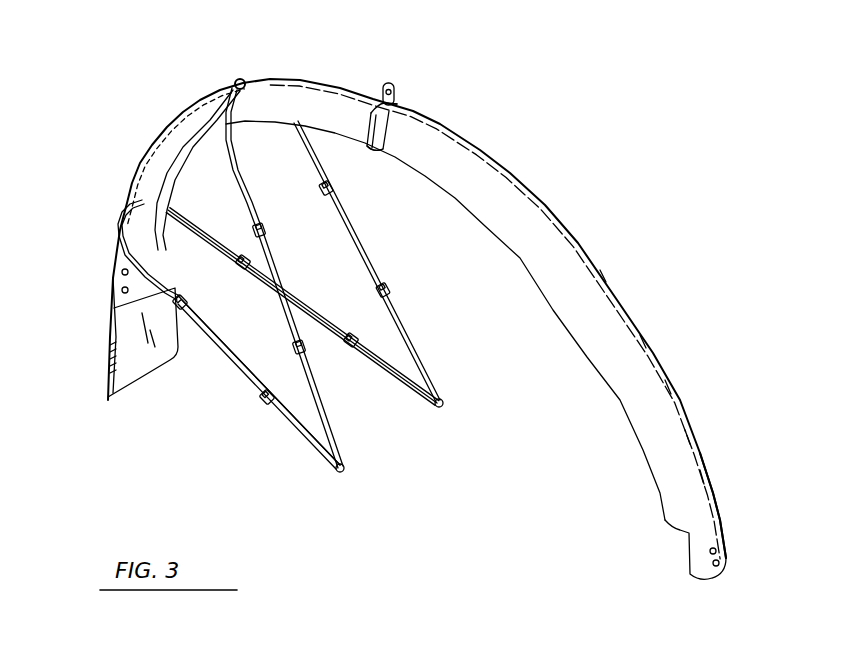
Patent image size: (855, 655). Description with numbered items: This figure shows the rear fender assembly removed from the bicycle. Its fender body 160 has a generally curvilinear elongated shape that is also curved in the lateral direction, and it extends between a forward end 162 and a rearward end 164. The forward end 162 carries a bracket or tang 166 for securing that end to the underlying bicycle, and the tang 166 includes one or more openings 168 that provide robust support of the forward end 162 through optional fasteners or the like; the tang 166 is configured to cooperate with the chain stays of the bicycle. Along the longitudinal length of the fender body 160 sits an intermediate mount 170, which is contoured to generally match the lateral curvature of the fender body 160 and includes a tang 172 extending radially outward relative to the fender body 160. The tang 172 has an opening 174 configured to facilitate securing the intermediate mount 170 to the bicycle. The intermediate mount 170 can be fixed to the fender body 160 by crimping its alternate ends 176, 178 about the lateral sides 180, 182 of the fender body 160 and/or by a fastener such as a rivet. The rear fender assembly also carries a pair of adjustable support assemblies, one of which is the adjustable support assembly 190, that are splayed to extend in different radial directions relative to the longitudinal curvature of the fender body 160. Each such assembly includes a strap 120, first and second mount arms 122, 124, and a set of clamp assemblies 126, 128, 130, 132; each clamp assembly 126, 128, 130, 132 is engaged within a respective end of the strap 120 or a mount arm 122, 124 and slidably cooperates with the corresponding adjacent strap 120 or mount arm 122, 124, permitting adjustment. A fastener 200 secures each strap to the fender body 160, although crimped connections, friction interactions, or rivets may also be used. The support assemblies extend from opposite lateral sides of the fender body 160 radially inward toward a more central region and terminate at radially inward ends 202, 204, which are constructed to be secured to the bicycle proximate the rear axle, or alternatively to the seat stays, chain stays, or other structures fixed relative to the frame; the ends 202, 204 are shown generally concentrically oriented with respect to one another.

The strap 120 is at (120, 238).
The first mount arm 122 is at (280, 414).
The second mount arm 124 is at (392, 360).
The clamp assembly 126 is at (270, 233).
The clamp assembly 128 is at (318, 184).
The clamp assembly 130 is at (352, 334).
The clamp assembly 132 is at (392, 290).
The fender body 160 is at (600, 292).
The forward end 162 is at (732, 517).
The rearward end 164 is at (130, 308).
The tang 166 is at (703, 578).
The openings 168 is at (719, 562).
The intermediate mount 170 is at (412, 108).
The tang 172 is at (385, 84).
The opening 174 is at (395, 90).
The end of intermediate mount body 176 is at (447, 106).
The end of intermediate mount body 178 is at (384, 163).
The lateral side 180 is at (524, 272).
The lateral side 182 is at (181, 170).
The adjustable support assembly 190 is at (289, 440).
The fastener 200 is at (146, 210).
The radially inward end 202 is at (333, 486).
The radially inward end 204 is at (443, 422).